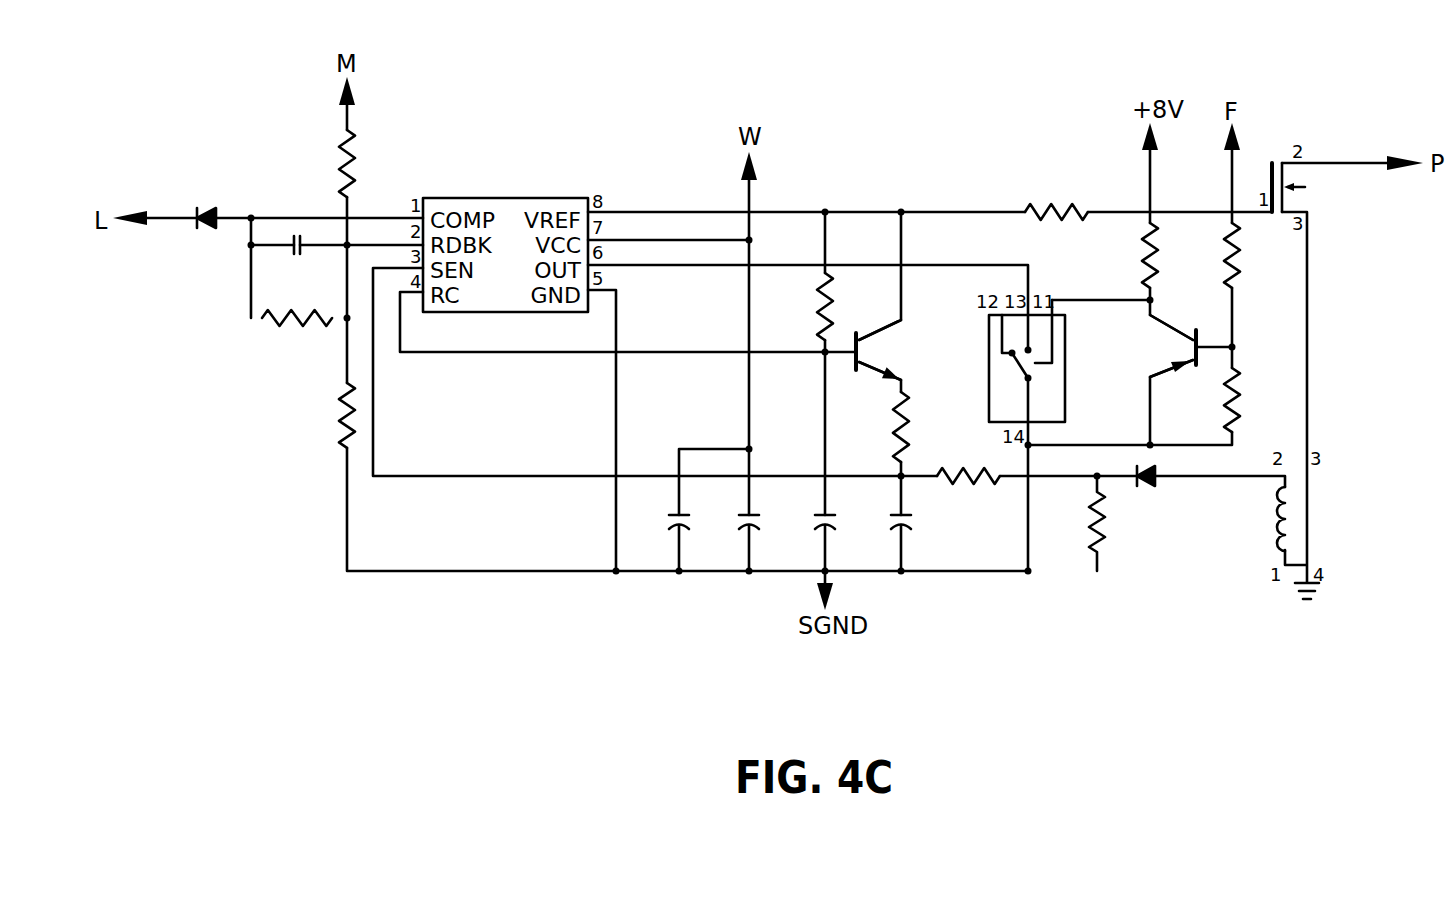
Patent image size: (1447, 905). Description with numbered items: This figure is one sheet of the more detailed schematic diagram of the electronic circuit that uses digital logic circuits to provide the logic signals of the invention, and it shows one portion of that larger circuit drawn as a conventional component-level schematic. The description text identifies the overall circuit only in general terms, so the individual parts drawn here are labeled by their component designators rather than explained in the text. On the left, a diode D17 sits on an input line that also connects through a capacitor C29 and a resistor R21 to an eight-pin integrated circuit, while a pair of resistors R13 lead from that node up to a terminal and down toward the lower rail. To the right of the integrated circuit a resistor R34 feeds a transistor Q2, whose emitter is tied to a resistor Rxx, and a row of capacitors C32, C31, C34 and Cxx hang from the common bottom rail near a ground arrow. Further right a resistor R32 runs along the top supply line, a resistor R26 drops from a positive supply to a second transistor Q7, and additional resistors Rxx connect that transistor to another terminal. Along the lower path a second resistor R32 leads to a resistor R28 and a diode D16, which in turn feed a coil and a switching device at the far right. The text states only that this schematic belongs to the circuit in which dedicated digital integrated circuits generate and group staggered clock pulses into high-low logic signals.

The resistor 715k R13 is at (321, 289).
The diode D17 is at (205, 208).
The capacitor 330 microfarad C29 is at (297, 270).
The resistor 100k R21 is at (297, 344).
The resistor R34 is at (797, 306).
The transistor 2N4401 Q2 is at (920, 350).
The resistor Rxx is at (1040, 342).
The capacitor C32 is at (657, 525).
The capacitor 100 microfarad C31 is at (728, 525).
The capacitor 1.5 microfarad C34 is at (805, 525).
The capacitor Cxx is at (879, 525).
The resistor 10k R32 is at (1012, 370).
The resistor 33k R26 is at (1127, 255).
The transistor 2N4401 Q7 is at (1133, 346).
The resistor 9k R28 is at (1076, 523).
The diode D16 is at (1146, 488).